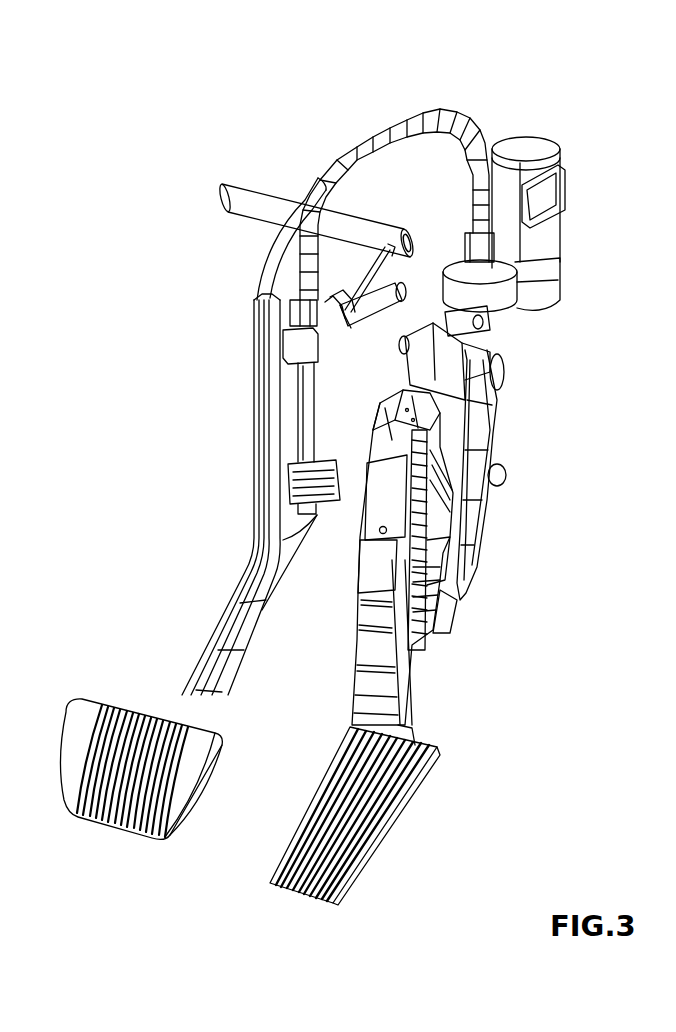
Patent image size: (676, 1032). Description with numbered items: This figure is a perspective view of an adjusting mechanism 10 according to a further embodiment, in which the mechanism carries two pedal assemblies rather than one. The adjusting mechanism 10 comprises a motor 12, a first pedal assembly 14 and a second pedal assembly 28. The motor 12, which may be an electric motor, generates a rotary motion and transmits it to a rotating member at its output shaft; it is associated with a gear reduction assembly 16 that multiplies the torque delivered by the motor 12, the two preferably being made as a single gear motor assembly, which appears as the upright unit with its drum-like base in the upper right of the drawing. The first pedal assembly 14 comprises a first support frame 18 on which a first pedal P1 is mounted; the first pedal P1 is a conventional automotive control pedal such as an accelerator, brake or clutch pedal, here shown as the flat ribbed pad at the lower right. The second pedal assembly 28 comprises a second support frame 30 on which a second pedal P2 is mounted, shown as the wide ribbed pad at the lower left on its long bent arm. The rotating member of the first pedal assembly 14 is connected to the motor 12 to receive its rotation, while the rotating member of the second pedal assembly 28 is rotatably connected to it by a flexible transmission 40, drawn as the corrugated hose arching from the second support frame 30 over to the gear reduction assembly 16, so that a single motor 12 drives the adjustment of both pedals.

The adjusting mechanism 10 is at (313, 90).
The flexible transmission 40 is at (430, 120).
The motor 12 is at (527, 155).
The gear reduction assembly 16 is at (545, 290).
The second pedal assembly 28 is at (234, 310).
The second support frame 30 is at (270, 440).
The first pedal assembly 14 is at (528, 432).
The first support frame 18 is at (482, 528).
The first pedal P1 is at (352, 882).
The second pedal P2 is at (96, 820).